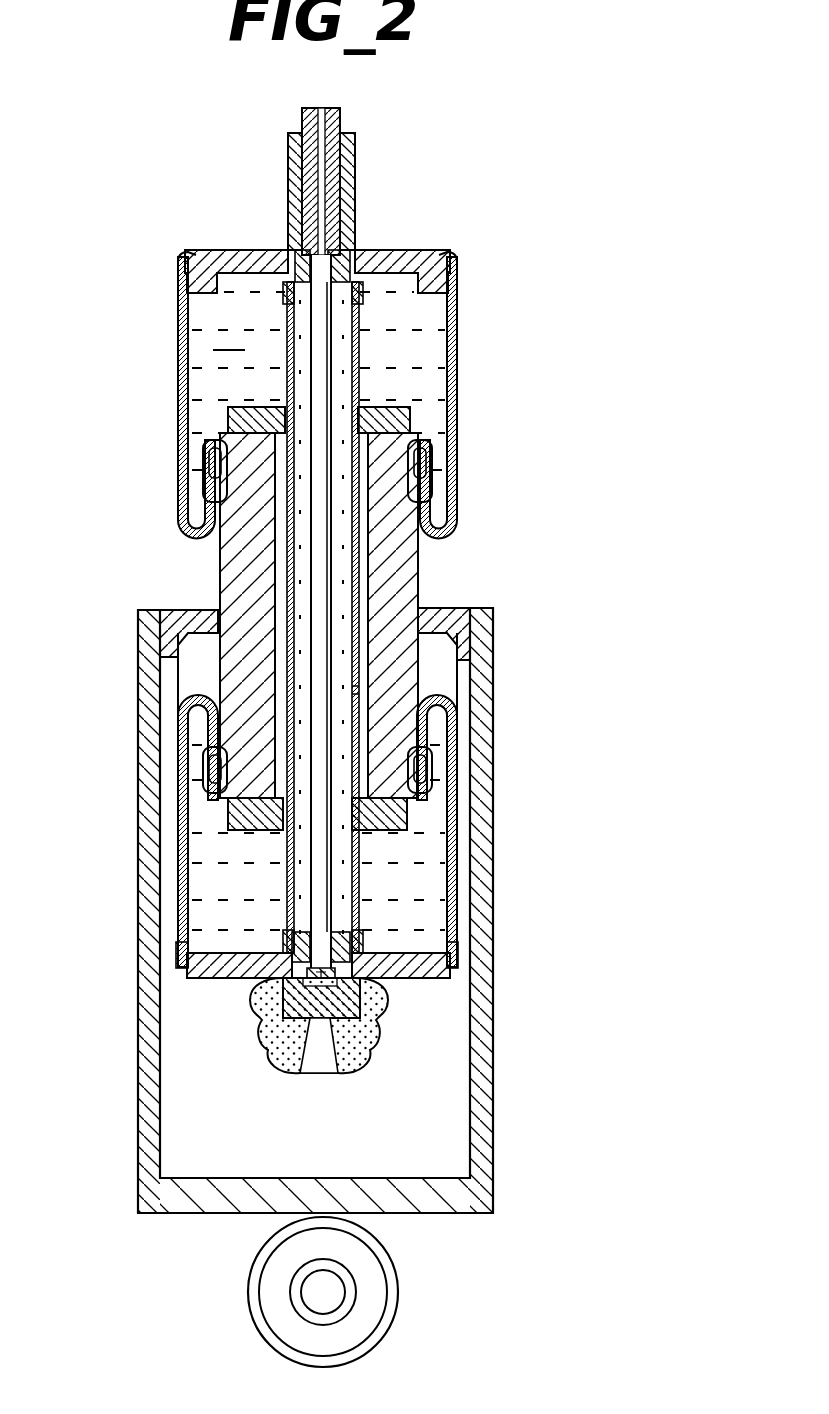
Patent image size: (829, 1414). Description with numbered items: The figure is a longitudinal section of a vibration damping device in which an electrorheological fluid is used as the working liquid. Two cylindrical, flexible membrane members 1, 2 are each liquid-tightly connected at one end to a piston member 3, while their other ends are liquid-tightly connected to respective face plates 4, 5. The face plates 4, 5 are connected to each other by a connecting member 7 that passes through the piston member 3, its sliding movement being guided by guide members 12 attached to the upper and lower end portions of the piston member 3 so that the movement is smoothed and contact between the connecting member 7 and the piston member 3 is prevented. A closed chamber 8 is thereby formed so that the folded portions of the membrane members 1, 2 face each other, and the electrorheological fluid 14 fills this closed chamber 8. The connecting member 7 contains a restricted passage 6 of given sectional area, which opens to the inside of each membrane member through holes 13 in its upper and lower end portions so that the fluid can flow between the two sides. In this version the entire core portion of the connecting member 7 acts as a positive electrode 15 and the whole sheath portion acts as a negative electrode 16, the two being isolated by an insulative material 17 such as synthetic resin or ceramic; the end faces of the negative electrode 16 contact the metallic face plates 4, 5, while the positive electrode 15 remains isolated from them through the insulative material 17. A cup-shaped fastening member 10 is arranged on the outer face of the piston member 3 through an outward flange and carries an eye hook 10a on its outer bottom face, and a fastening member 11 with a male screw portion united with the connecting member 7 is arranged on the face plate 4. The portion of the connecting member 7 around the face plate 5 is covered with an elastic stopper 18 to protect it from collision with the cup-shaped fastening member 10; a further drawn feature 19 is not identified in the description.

The cylindrical flexible membrane member 1 is at (465, 377).
The cylindrical flexible membrane member 2 is at (460, 820).
The piston member 3 is at (423, 560).
The face plate 4 is at (410, 248).
The face plate 5 is at (400, 978).
The restricted passage 6 is at (340, 465).
The connecting member 7 is at (367, 347).
The closed chamber 8 is at (318, 381).
The cup-shaped fastening member 10 is at (493, 1013).
The eye hook 10a is at (398, 1290).
The fastening member 11 is at (300, 125).
The guide member 12 is at (248, 418).
The hole 13 is at (282, 305).
The electrorheological fluid 14 is at (210, 868).
The positive electrode 15 is at (325, 597).
The negative electrode 16 is at (360, 690).
The insulative material 17 is at (330, 182).
The stopper 18 is at (360, 1073).
The hook portion 19 is at (453, 303).